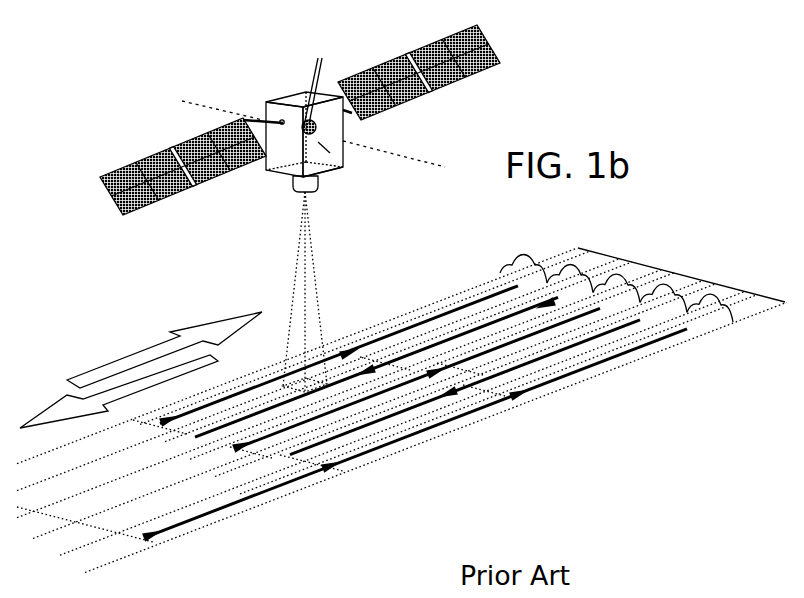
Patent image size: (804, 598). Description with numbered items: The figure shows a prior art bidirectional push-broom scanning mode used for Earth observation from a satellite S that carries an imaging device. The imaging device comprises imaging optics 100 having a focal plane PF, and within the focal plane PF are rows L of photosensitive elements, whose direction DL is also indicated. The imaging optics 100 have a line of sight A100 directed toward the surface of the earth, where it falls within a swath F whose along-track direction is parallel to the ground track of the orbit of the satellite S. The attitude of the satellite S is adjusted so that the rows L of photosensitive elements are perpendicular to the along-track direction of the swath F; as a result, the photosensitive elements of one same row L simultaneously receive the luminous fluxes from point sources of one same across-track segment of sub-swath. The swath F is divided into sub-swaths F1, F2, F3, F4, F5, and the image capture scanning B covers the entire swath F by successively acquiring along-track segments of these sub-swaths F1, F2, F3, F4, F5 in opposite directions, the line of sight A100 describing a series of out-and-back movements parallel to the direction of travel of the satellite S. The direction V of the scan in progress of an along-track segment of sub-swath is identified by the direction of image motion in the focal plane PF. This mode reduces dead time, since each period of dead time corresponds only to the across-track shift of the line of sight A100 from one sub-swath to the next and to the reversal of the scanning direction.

The satellite S is at (295, 88).
The direction of the rows of photosensitive elements DL is at (205, 100).
The rows of photosensitive elements L is at (316, 95).
The imaging optics 100 is at (293, 178).
The focal plane PF is at (340, 170).
The line of sight A100 is at (293, 288).
The swath F is at (685, 276).
The sub-swath F1 is at (534, 267).
The sub-swath F2 is at (578, 276).
The sub-swath F3 is at (623, 286).
The sub-swath F4 is at (667, 297).
The sub-swath F5 is at (712, 307).
The image capture scanning B is at (608, 362).
The direction of scan V is at (122, 358).